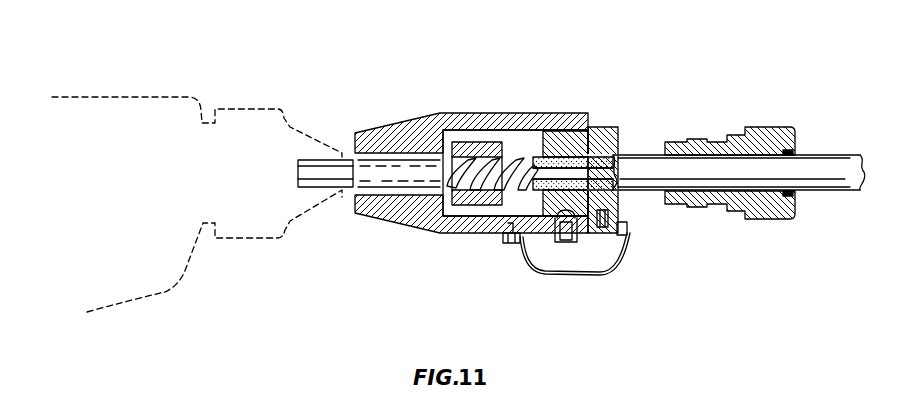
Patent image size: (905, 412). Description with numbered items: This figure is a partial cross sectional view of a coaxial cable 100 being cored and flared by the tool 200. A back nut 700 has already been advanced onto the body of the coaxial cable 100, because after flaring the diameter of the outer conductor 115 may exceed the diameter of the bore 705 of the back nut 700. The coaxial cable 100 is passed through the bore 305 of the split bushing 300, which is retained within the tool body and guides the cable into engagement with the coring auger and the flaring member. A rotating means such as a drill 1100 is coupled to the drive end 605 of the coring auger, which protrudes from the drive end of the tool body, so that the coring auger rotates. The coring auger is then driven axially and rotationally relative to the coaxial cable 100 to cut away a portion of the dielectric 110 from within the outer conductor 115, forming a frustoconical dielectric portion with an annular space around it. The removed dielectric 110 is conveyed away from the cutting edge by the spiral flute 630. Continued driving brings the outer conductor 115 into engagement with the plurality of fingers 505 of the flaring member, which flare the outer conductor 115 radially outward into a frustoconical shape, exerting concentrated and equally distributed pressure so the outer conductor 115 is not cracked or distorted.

The drill 1100 is at (218, 74).
The drive end of the coring auger 605 is at (312, 172).
The tool 200 is at (468, 65).
The spiral flute 630 is at (470, 158).
The plurality of fingers 505 is at (504, 205).
The split bushing 300 is at (605, 127).
The bore of the split bushing 305 is at (643, 190).
The coaxial cable 100 is at (700, 182).
The back nut 700 is at (737, 97).
The bore of the back nut 705 is at (750, 197).
The outer conductor 115 is at (531, 240).
The dielectric 110 is at (611, 235).